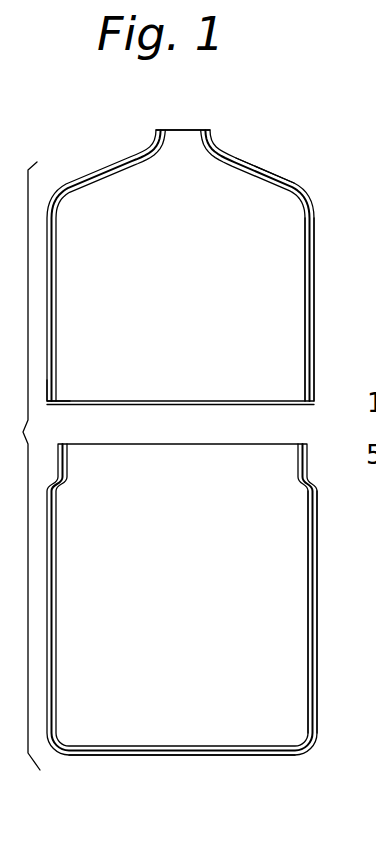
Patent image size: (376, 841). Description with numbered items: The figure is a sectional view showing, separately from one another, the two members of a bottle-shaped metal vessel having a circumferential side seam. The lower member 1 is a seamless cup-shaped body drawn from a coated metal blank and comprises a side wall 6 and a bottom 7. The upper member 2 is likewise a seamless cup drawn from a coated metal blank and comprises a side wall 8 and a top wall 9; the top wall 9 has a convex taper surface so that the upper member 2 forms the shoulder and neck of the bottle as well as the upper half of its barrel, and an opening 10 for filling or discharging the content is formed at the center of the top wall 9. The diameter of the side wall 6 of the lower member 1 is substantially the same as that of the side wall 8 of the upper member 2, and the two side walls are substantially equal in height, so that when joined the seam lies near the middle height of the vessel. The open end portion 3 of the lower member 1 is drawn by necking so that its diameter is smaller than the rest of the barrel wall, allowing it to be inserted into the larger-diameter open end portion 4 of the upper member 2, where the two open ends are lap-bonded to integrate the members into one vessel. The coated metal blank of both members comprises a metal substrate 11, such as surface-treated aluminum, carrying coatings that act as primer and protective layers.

The lower member 1 is at (191, 594).
The upper member 2 is at (192, 282).
The open end portion of the lower member 3 is at (58, 446).
The open end portion of the upper member 4 is at (48, 405).
The side wall of the lower member 6 is at (316, 606).
The bottom of the lower member 7 is at (186, 756).
The side wall of the upper member 8 is at (314, 283).
The top wall of the upper member 9 is at (263, 177).
The opening 10 is at (183, 129).
The metal substrate 11 is at (313, 368).